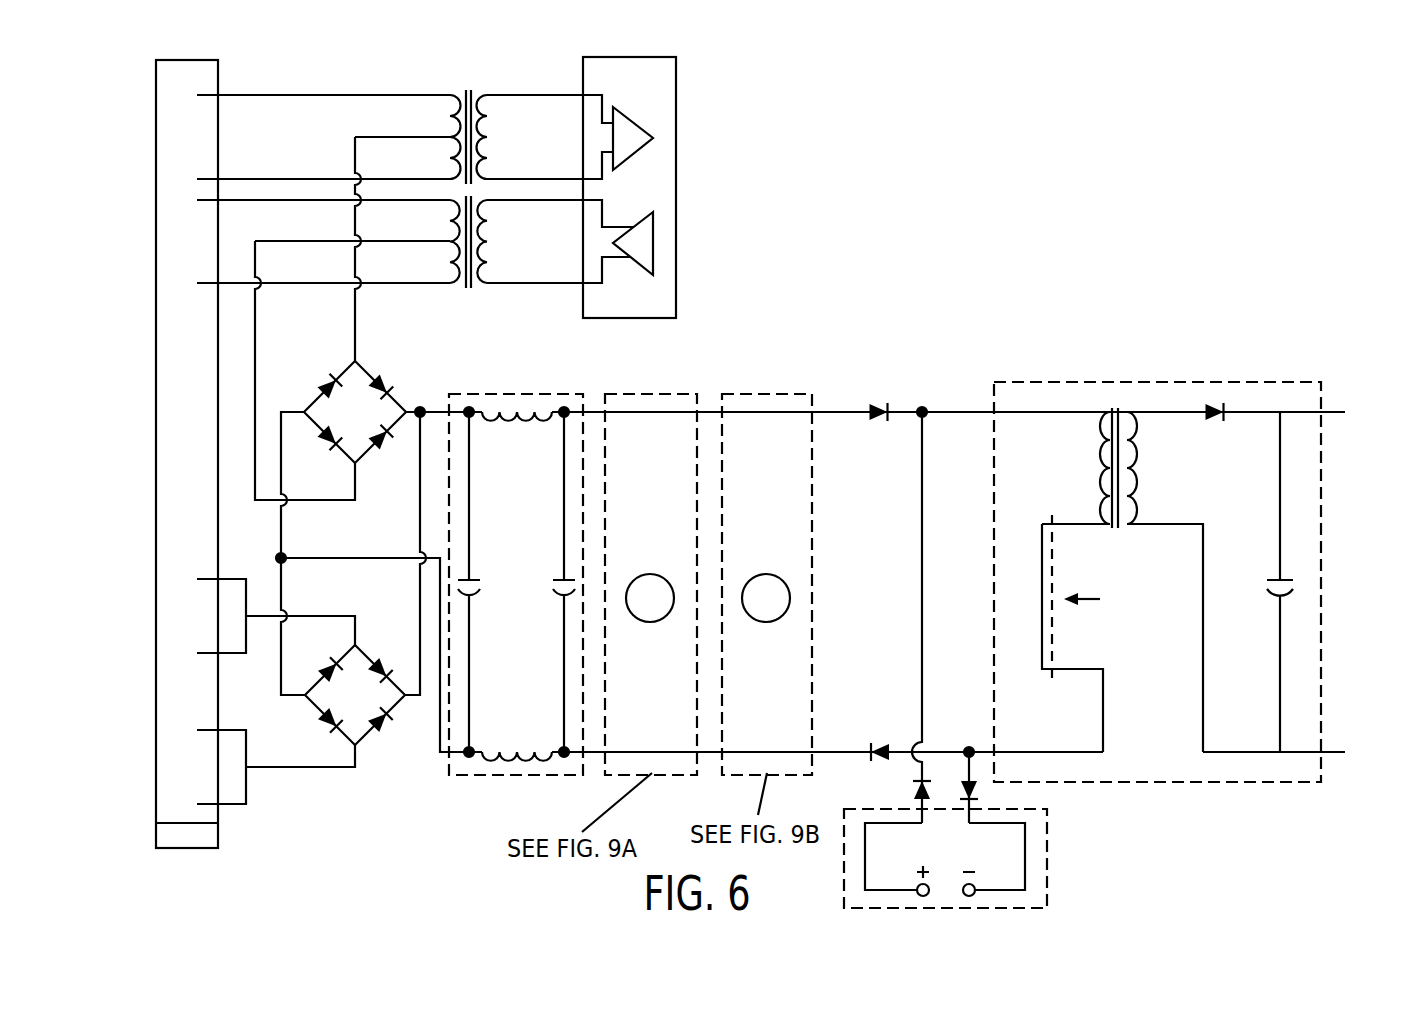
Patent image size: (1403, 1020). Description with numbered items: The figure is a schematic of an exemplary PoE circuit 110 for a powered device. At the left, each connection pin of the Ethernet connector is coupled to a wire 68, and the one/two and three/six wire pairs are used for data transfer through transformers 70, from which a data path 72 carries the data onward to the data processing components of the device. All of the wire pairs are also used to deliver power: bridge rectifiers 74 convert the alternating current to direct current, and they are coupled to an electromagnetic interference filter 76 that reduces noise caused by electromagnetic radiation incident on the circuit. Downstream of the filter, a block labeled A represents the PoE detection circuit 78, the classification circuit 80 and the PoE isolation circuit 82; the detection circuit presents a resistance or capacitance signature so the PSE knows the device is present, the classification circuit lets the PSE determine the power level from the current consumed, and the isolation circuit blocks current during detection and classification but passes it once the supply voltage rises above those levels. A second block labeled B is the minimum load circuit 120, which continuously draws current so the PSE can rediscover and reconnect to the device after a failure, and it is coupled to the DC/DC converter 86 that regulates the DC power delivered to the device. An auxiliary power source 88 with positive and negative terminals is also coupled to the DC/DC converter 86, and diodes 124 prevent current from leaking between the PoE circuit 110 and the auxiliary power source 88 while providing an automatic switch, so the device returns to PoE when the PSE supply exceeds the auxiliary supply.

The wire 68 is at (227, 177).
The transformers 70 is at (469, 82).
The data path 72 is at (677, 92).
The bridge rectifiers 74 is at (368, 376).
The electromagnetic interference filter 76 is at (515, 777).
The PoE detection circuit 78 is at (606, 566).
The classification circuit 80 is at (606, 566).
The PoE isolation circuit 82 is at (650, 393).
The DC/DC converter 86 is at (1163, 382).
The auxiliary power source 88 is at (1047, 853).
The PoE circuit 110 is at (1049, 222).
The minimum load circuit 120 is at (766, 393).
The diodes 124 is at (869, 742).